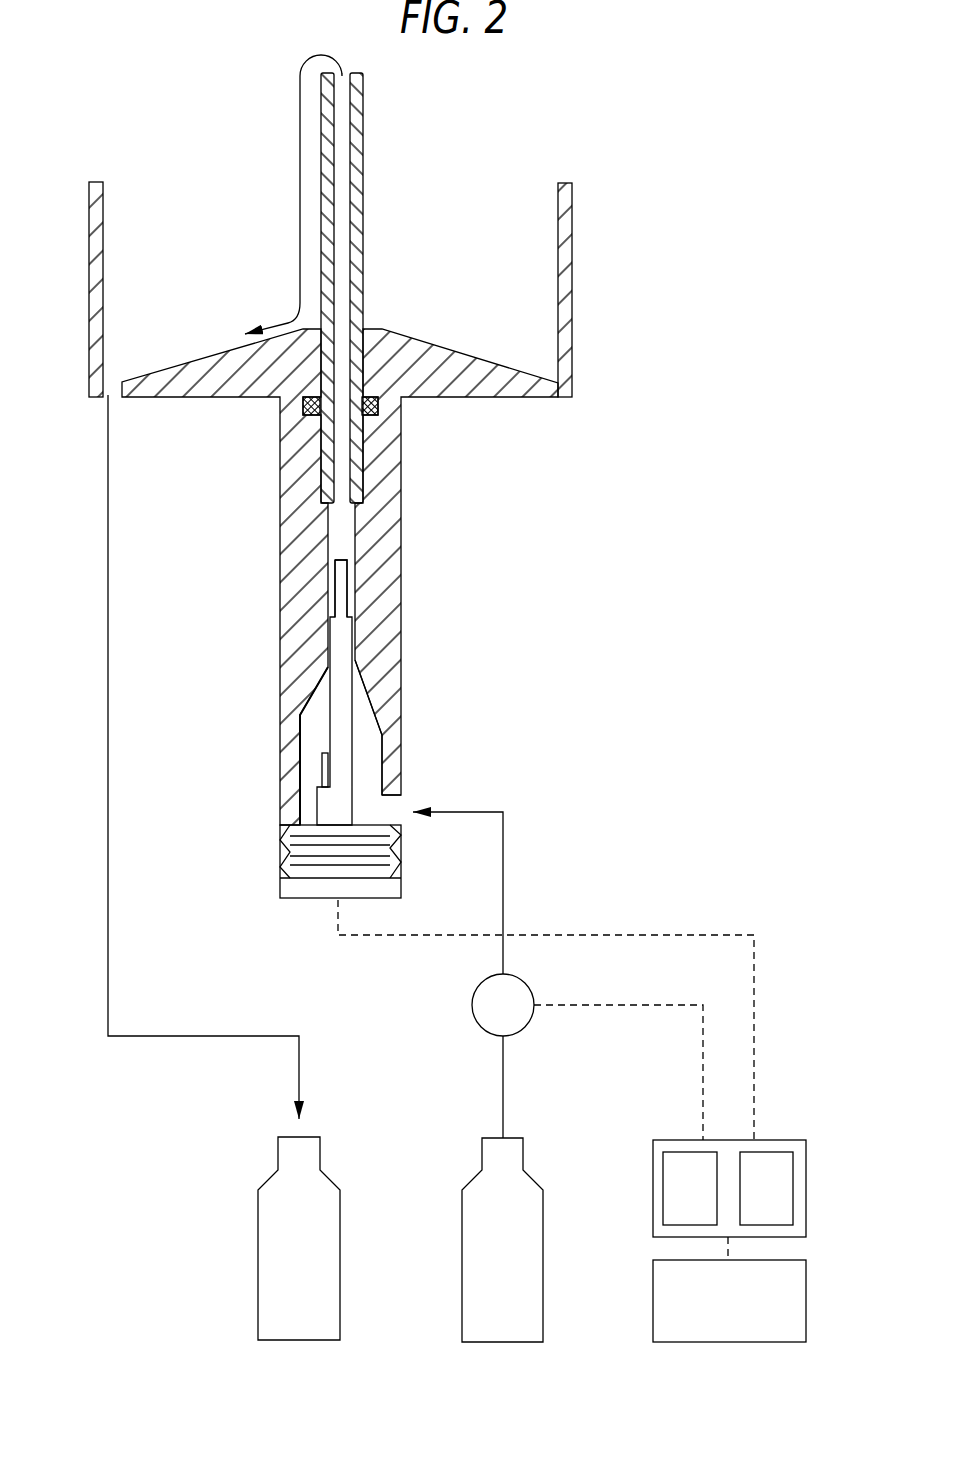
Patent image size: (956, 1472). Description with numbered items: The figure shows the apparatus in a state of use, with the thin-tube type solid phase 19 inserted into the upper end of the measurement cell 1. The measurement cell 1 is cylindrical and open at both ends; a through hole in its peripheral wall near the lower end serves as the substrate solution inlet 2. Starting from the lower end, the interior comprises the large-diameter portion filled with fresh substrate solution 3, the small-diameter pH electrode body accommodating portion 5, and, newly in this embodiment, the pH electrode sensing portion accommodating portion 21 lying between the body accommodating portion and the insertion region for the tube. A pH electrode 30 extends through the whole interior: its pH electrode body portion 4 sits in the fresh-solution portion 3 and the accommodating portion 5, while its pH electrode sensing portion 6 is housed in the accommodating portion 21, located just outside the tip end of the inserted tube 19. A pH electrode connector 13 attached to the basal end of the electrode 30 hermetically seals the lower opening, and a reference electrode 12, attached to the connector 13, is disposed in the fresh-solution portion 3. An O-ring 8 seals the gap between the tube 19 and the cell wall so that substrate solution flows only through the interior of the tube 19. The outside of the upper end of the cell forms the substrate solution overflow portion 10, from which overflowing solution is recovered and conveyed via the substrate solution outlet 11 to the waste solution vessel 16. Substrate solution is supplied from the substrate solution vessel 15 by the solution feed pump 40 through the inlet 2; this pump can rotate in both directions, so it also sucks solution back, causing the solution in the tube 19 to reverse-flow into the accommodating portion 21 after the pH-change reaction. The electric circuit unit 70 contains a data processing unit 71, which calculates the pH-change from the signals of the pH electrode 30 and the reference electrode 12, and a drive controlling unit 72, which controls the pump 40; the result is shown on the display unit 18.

The measurement cell 1 is at (414, 488).
The substrate solution inlet 2 is at (405, 798).
The portion filled with fresh substrate solution 3 is at (362, 733).
The pH electrode body portion 4 is at (353, 692).
The pH electrode body accommodating portion 5 is at (355, 630).
The pH electrode sensing portion 6 is at (347, 587).
The O-ring 8 is at (380, 408).
The substrate solution overflow portion 10 is at (592, 331).
The substrate solution outlet 11 is at (120, 403).
The reference electrode 12 is at (322, 770).
The pH electrode connector 13 is at (280, 893).
The substrate solution vessel 15 is at (462, 1267).
The waste solution vessel 16 is at (258, 1266).
The display unit 18 is at (653, 1302).
The thin-tube type solid phase 19 is at (378, 236).
The pH electrode sensing portion accommodating portion 21 is at (362, 549).
The pH electrode 30 is at (311, 728).
The solution feed pump 40 is at (472, 1005).
The electric circuit unit 70 is at (653, 1190).
The data processing unit 71 is at (782, 1152).
The drive controlling unit 72 is at (672, 1152).